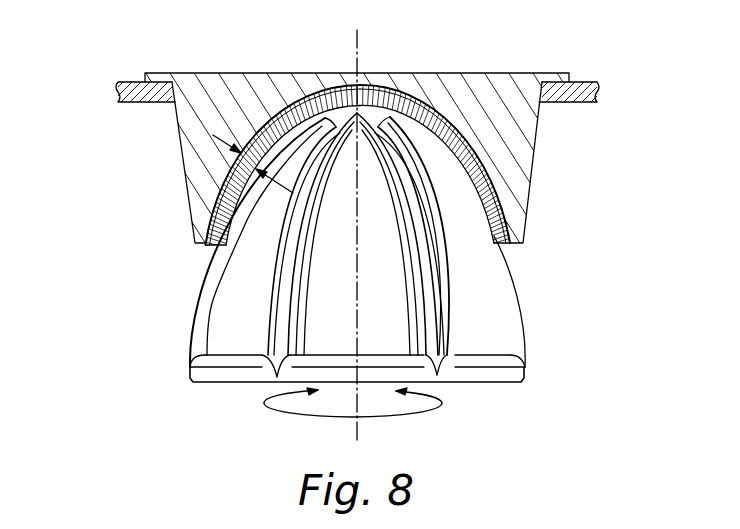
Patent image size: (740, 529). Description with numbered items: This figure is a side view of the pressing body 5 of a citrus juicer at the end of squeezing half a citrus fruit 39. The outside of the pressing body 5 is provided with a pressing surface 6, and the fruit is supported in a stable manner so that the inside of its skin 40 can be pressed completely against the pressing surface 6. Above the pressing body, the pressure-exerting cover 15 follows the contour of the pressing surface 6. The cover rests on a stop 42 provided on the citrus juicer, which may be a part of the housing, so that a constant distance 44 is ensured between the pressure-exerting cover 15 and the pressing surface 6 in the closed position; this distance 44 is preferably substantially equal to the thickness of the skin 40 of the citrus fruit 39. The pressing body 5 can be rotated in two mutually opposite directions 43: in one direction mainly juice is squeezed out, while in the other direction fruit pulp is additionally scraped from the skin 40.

The pressing body 5 is at (200, 300).
The pressing surface 6 is at (522, 308).
The pressure-exerting cover 15 is at (522, 128).
The citrus fruit 39 is at (220, 192).
The skin 40 is at (490, 185).
The stop 42 is at (118, 92).
The mutually opposite directions 43 is at (442, 403).
The constant distance 44 is at (262, 132).